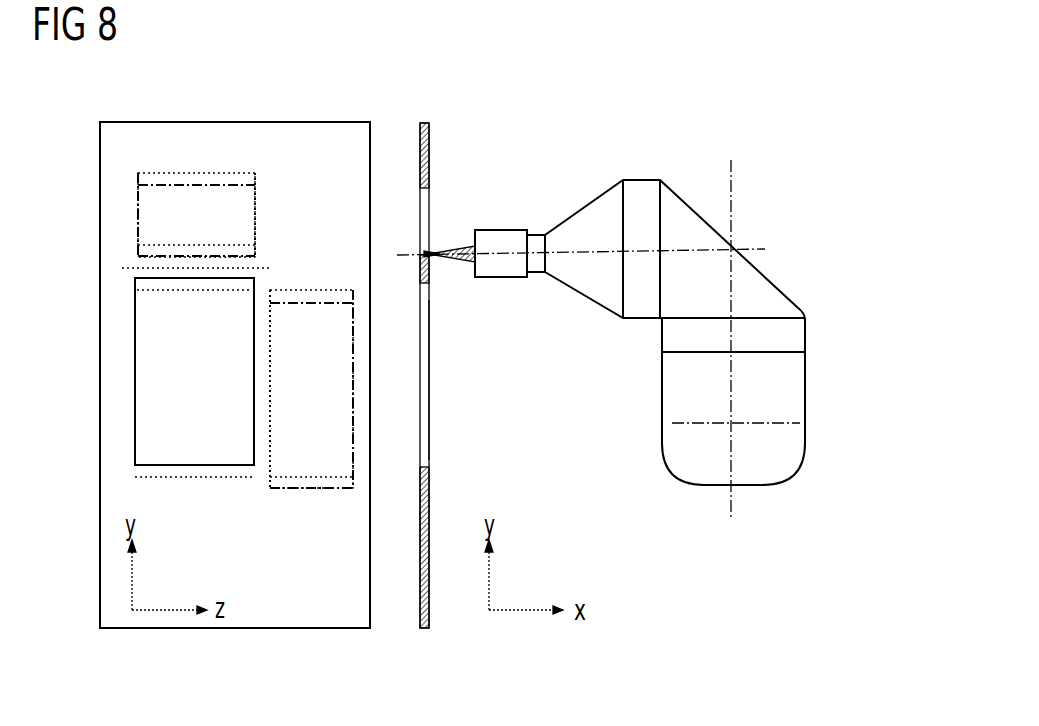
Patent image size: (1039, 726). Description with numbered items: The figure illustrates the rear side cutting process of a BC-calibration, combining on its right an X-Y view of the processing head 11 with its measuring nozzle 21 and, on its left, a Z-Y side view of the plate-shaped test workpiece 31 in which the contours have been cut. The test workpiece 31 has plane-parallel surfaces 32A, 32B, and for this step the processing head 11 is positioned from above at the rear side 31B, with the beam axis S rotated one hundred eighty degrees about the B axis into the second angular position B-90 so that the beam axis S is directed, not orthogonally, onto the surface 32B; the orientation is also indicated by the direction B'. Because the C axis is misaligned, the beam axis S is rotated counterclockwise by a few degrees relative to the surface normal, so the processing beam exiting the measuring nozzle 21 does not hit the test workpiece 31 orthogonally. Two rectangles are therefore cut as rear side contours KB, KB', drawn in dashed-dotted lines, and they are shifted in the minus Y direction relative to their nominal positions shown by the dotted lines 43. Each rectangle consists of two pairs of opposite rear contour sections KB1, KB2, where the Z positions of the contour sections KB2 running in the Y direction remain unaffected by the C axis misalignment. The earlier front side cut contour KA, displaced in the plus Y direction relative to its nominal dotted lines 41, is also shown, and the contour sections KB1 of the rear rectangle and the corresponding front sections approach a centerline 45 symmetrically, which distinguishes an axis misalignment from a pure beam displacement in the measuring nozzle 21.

The processing head 11 is at (700, 162).
The measuring nozzle 21 is at (500, 230).
The test workpiece 31 is at (100, 140).
The rear side 31B is at (651, 504).
The surface of the front side 32A is at (100, 483).
The surface of the rear side 32B is at (425, 628).
The dotted lines 41 is at (170, 292).
The dotted lines 43 is at (225, 185).
The centerline 45 is at (125, 270).
The rear contour sections KB1 is at (175, 185).
The rear contour sections KB2 is at (138, 200).
The rear side contour KB is at (324, 169).
The rear side contour KB' is at (328, 495).
The cut contour KA is at (152, 361).
The beam axis S is at (405, 258).
The second angular position B-90 is at (581, 164).
The direction B' is at (767, 511).